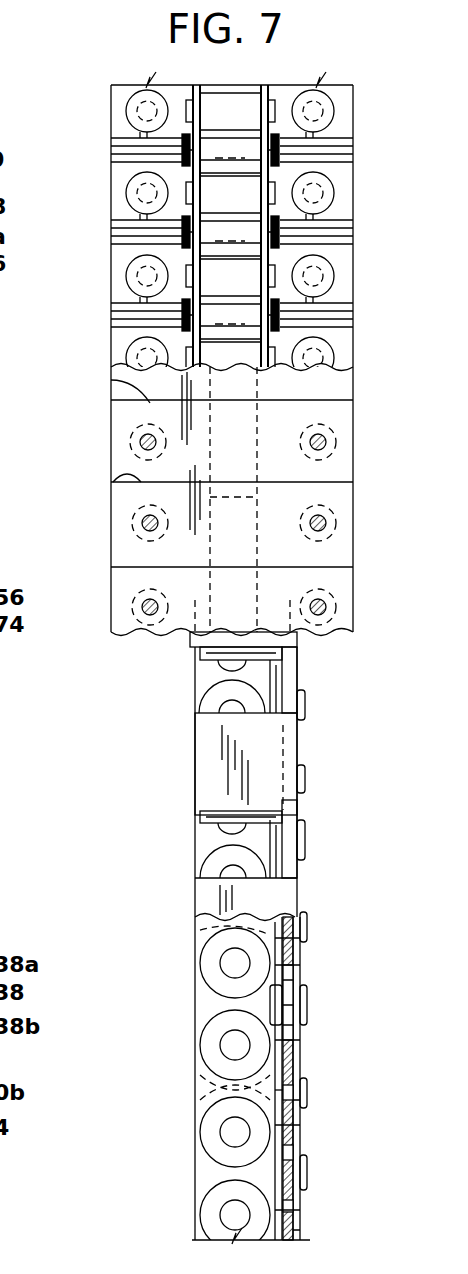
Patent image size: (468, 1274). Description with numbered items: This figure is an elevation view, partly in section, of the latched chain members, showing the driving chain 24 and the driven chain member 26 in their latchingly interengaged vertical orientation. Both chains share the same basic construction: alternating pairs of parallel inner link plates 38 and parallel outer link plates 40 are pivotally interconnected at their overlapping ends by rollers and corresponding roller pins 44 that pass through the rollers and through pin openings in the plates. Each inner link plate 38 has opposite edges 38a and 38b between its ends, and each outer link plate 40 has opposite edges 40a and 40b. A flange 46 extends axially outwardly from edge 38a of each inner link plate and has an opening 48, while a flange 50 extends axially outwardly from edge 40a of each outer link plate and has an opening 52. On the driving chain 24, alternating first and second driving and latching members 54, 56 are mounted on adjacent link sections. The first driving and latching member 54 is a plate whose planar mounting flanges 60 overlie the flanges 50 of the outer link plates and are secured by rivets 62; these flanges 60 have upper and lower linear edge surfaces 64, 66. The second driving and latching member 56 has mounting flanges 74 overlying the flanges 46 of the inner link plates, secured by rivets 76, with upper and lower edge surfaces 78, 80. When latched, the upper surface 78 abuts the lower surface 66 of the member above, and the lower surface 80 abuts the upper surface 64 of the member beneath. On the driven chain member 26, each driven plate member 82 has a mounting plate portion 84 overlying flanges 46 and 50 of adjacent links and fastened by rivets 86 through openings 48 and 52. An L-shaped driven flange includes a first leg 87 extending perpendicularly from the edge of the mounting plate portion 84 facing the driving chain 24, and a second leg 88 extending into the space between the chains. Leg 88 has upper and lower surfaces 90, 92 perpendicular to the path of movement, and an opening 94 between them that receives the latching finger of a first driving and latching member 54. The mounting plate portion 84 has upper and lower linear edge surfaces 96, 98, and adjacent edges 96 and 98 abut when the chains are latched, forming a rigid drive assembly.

The driving chain 24 is at (358, 343).
The driven chain member 26 is at (195, 1094).
The inner link plates 38 is at (273, 112).
The edge of inner link plate 38a is at (300, 977).
The edge of inner link plate 38b is at (270, 282).
The outer link plates 40 is at (130, 122).
The edge of outer link plate 40a is at (300, 950).
The edge of outer link plate 40b is at (112, 167).
The roller pins 44 is at (188, 332).
The flange 46 is at (120, 255).
The opening 48 is at (310, 1178).
The flange 50 is at (115, 198).
The opening 52 is at (300, 1063).
The first driving and latching member 54 is at (110, 532).
The second driving and latching member 56 is at (195, 458).
The mounting flanges 60 is at (124, 555).
The rivets 62 is at (126, 207).
The upper linear edge surface 64 is at (112, 478).
The lower linear edge surface 66 is at (120, 402).
The mounting flanges 74 is at (150, 403).
The rivets 76 is at (380, 273).
The upper linear edge surface 78 is at (116, 398).
The lower linear edge surface 80 is at (128, 483).
The driven plate member 82 is at (308, 700).
The mounting plate portion 84 is at (306, 1162).
The rivets 86 is at (305, 1208).
The first leg 87 is at (208, 758).
The second leg 88 is at (200, 657).
The upper surface 90 is at (285, 790).
The lower surface 92 is at (297, 846).
The opening 94 is at (213, 663).
The upper linear edge surface 96 is at (300, 1038).
The lower linear edge surface 98 is at (305, 1232).